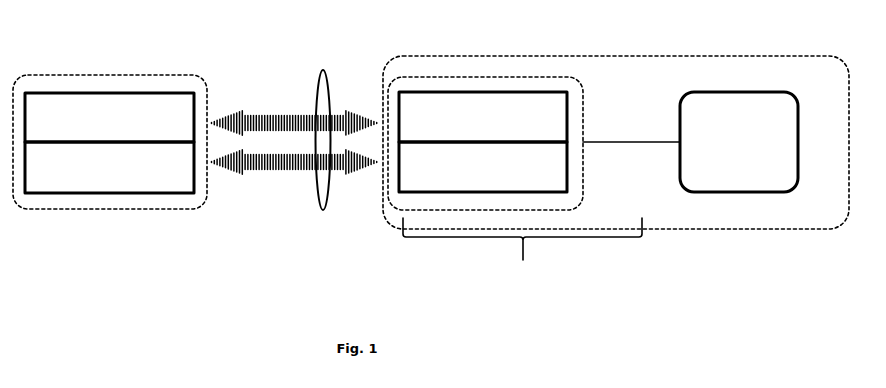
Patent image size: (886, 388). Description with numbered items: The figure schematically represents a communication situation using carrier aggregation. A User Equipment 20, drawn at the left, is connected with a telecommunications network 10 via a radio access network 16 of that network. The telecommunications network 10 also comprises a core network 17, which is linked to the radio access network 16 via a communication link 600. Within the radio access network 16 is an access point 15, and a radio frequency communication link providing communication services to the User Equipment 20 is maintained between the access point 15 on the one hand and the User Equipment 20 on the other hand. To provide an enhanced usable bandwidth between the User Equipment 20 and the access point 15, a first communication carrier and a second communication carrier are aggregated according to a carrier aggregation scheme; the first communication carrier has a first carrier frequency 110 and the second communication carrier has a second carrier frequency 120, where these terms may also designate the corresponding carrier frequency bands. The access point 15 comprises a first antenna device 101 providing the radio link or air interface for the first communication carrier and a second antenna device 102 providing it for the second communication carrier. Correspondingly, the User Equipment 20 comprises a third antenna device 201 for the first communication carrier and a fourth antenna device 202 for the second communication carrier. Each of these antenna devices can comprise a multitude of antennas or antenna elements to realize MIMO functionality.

The telecommunications network 10 is at (580, 57).
The access point 15 is at (565, 78).
The radio access network 16 is at (522, 248).
The core network 17 is at (793, 98).
The User Equipment 20 is at (198, 77).
The first antenna device 101 is at (567, 120).
The second antenna device 102 is at (567, 192).
The first carrier frequency 110 is at (288, 112).
The second carrier frequency 120 is at (287, 171).
The third antenna device 201 is at (194, 105).
The fourth antenna device 202 is at (194, 192).
The communication link 600 is at (612, 142).